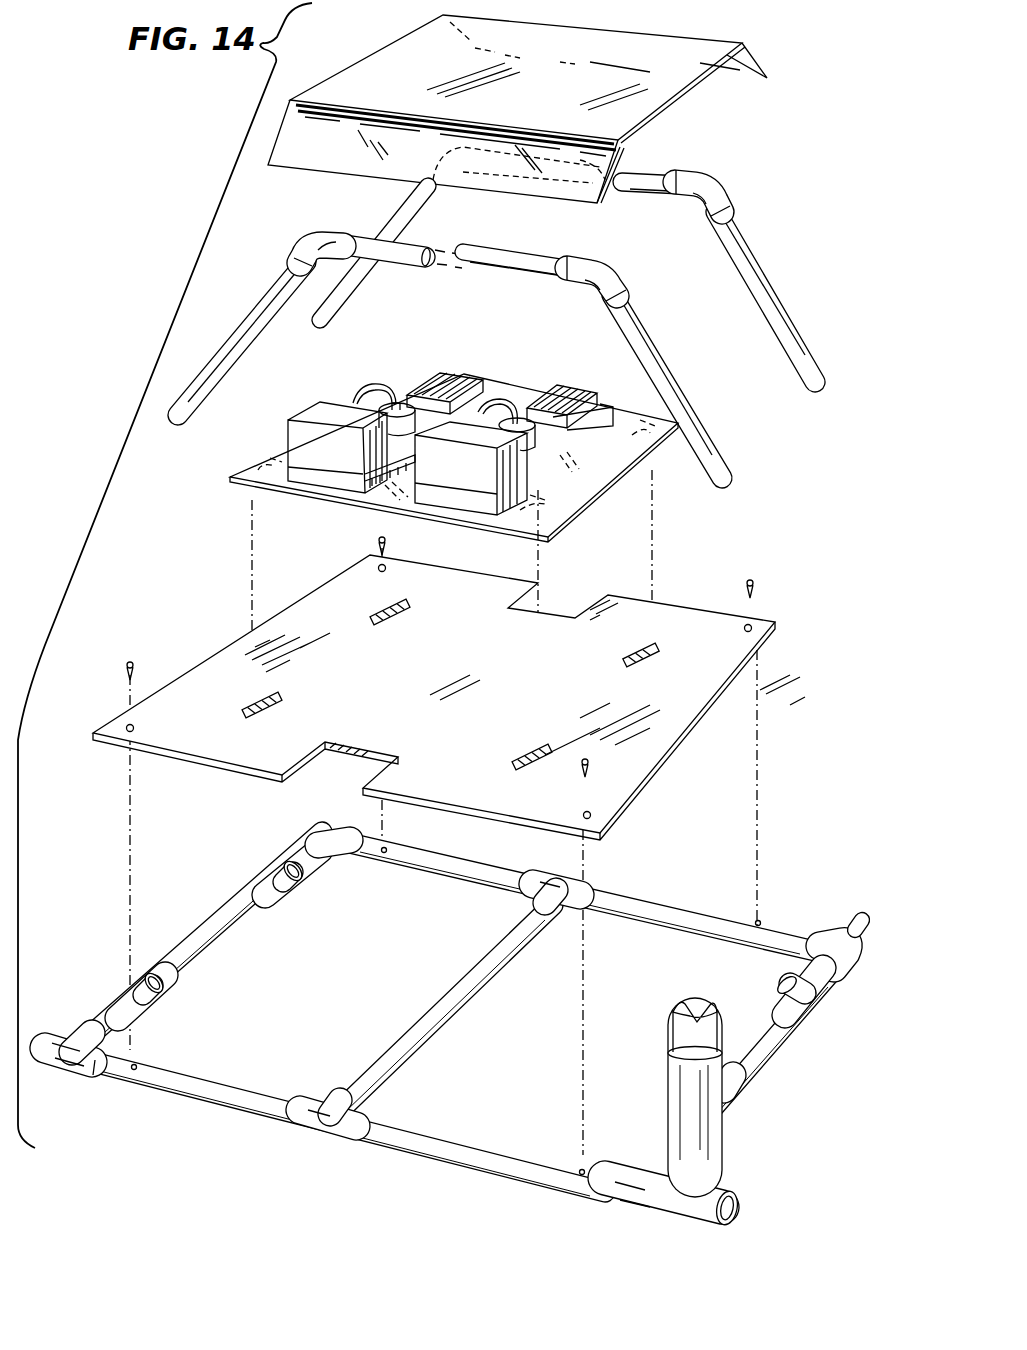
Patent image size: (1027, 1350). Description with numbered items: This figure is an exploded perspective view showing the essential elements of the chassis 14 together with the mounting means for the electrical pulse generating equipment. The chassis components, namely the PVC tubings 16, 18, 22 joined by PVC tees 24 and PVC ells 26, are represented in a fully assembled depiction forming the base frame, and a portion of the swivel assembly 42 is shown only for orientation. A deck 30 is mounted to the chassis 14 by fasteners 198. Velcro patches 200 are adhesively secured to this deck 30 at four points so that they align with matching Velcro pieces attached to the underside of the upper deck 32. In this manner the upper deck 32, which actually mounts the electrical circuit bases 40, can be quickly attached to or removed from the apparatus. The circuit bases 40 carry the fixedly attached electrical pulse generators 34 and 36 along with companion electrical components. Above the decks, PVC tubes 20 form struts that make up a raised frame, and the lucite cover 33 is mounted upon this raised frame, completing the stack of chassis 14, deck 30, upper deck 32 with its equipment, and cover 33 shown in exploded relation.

The chassis 14 is at (453, 1037).
The PVC tubing 16 is at (680, 895).
The PVC tubing 18 is at (232, 930).
The PVC tubes 20 is at (248, 320).
The PVC tubing 22 is at (565, 250).
The PVC tees 24 is at (288, 888).
The PVC ells 26 is at (628, 272).
The deck 30 is at (630, 775).
The upper deck 32 is at (325, 503).
The lucite cover 33 is at (698, 50).
The electrical pulse generator 34 is at (469, 476).
The electrical pulse generator 36 is at (340, 460).
The electrical circuit bases 40 is at (552, 388).
The swivel assembly 42 is at (760, 1137).
The fasteners 198 is at (755, 585).
The Velcro patches 200 is at (655, 465).